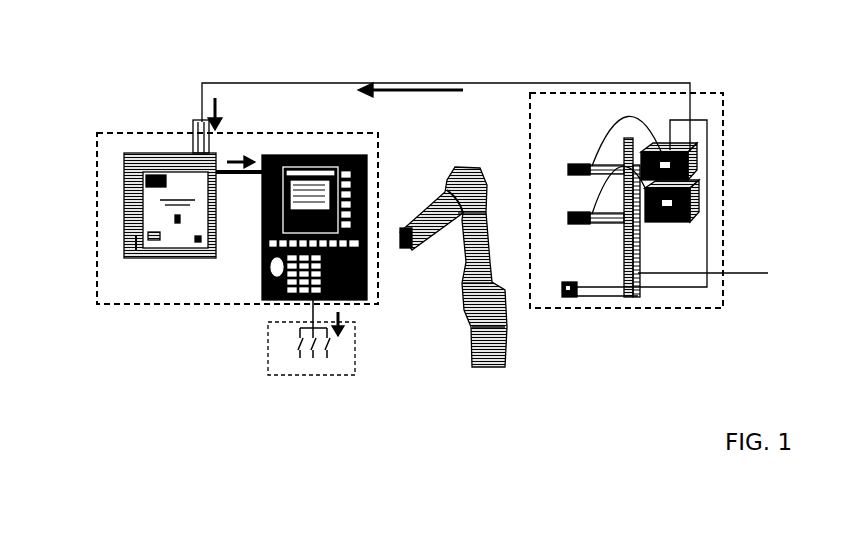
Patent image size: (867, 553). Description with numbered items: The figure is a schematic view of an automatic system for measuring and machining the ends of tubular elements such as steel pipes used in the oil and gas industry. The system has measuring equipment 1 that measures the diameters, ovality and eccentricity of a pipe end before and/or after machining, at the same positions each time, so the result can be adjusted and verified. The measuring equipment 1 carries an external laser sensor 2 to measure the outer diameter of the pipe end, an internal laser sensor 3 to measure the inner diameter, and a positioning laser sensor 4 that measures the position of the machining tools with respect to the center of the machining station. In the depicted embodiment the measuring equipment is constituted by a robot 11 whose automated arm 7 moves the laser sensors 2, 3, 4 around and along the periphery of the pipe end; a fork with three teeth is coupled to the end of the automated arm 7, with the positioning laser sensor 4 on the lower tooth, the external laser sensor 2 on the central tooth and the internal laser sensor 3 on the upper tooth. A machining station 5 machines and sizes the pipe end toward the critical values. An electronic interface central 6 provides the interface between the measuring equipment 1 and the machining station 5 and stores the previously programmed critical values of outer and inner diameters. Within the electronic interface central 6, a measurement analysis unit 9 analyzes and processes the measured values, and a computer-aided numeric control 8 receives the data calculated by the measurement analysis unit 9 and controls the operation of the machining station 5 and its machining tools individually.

The measuring equipment 1 is at (727, 127).
The external laser sensor 2 is at (567, 163).
The internal laser sensor 3 is at (562, 210).
The positioning laser sensor 4 is at (557, 277).
The machining station 5 is at (268, 360).
The electronic interface central 6 is at (131, 131).
The automated arm 7 is at (718, 273).
The computer-aided numeric control (CNC) 8 is at (285, 155).
The measurement analysis unit 9 is at (124, 184).
The robot 11 is at (503, 357).